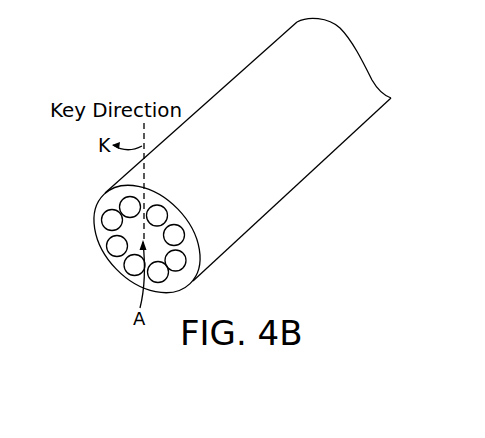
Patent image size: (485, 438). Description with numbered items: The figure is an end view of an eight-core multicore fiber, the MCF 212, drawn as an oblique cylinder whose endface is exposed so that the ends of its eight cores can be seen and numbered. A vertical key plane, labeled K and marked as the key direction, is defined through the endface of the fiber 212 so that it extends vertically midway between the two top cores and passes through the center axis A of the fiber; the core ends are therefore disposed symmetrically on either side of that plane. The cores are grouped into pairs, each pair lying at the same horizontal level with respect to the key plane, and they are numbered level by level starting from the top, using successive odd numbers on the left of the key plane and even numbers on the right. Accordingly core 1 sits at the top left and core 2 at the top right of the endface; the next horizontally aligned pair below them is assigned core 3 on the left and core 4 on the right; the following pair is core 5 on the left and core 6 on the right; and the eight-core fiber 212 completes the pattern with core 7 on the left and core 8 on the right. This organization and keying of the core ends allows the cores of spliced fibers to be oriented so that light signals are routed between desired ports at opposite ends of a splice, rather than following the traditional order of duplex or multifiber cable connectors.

The eight-core MCF 212 is at (302, 167).
The core # 1 is at (130, 207).
The core # 2 is at (157, 215).
The core # 3 is at (112, 220).
The core # 4 is at (174, 235).
The core # 5 is at (117, 246).
The core # 6 is at (175, 260).
The core # 7 is at (134, 265).
The core # 8 is at (158, 272).